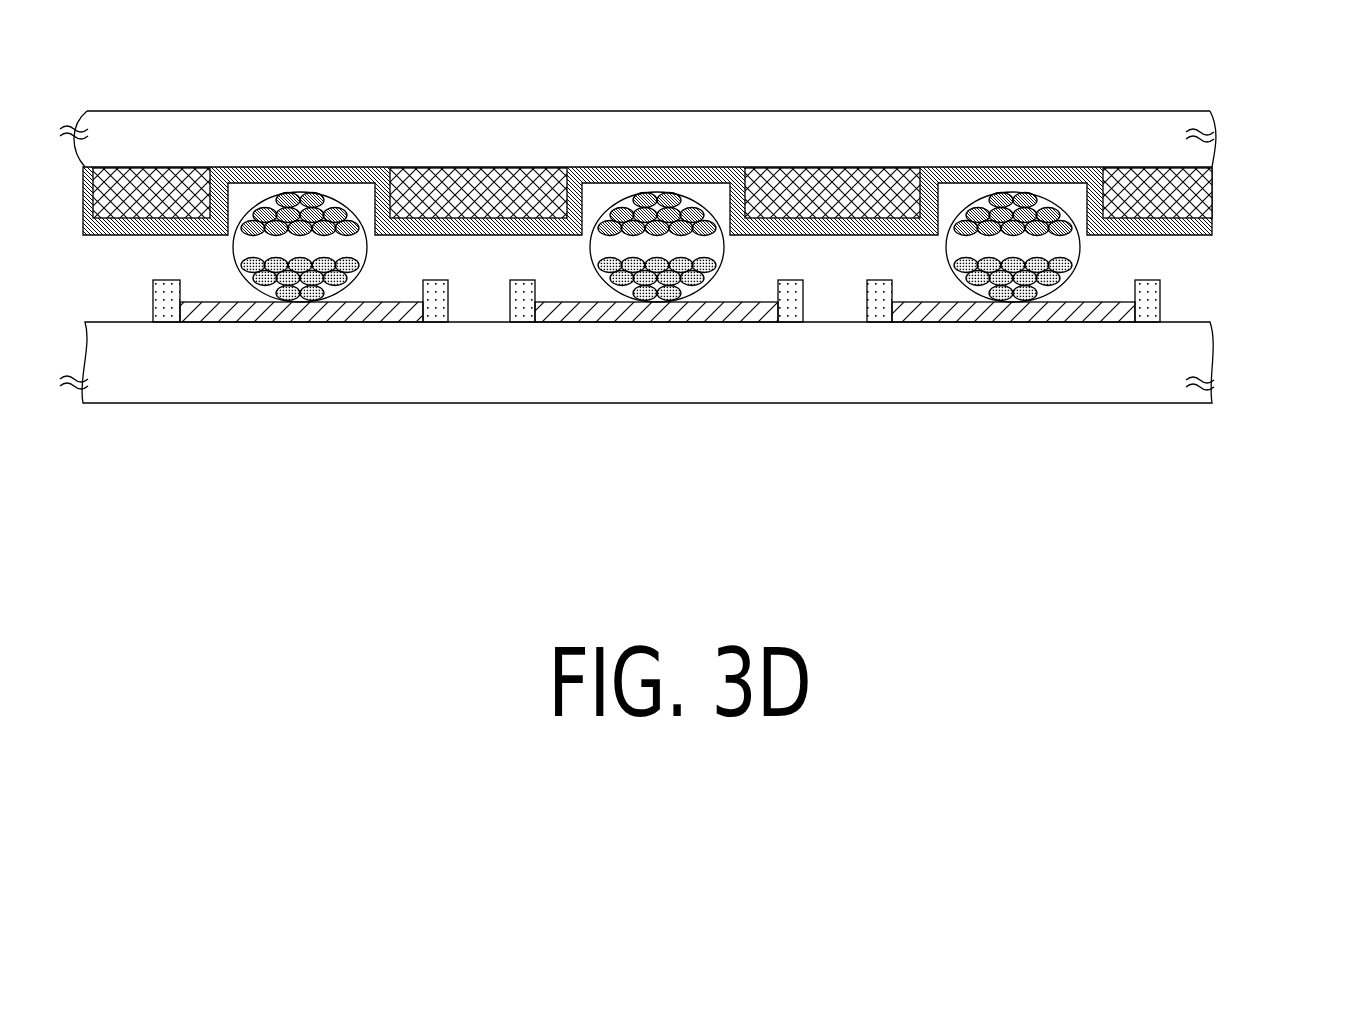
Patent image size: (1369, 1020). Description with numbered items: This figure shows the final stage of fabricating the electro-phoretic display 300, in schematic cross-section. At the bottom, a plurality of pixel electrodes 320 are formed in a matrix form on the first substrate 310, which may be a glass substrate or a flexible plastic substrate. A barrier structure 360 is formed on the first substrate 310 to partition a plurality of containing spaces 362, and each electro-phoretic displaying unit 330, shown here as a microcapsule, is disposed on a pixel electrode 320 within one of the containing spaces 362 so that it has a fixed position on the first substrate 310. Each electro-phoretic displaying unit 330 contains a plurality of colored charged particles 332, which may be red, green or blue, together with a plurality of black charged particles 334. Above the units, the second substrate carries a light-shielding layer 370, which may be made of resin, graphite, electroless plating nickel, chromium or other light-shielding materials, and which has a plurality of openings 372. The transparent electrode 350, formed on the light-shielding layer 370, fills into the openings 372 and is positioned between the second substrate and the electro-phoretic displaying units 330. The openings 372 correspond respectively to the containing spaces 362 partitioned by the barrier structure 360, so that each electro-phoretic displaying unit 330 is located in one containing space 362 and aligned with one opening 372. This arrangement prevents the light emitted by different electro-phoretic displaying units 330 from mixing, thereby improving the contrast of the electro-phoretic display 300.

The electro-phoretic display 300 is at (712, 273).
The first substrate 310 is at (1212, 357).
The pixel electrodes 320 is at (1055, 315).
The electro-phoretic displaying unit 330 is at (1072, 247).
The colored charged particles 332 is at (993, 303).
The black charged particles 334 is at (1002, 198).
The transparent electrode 350 is at (1097, 190).
The barrier structure 360 is at (1160, 290).
The containing spaces 362 is at (918, 290).
The light-shielding layer 370 is at (1213, 183).
The openings 372 is at (942, 207).